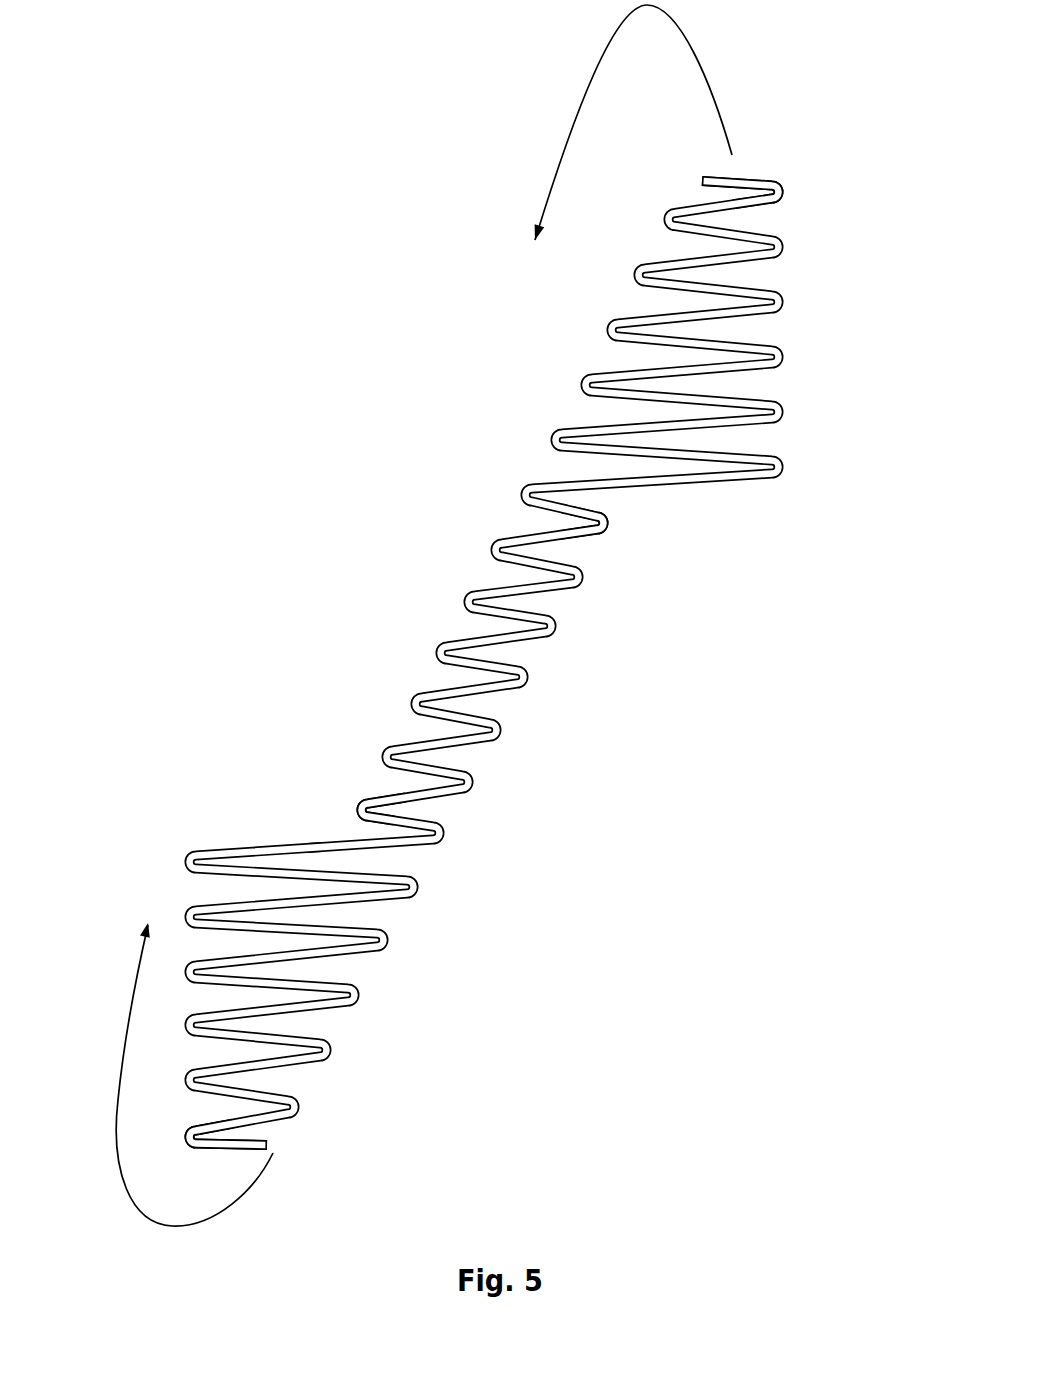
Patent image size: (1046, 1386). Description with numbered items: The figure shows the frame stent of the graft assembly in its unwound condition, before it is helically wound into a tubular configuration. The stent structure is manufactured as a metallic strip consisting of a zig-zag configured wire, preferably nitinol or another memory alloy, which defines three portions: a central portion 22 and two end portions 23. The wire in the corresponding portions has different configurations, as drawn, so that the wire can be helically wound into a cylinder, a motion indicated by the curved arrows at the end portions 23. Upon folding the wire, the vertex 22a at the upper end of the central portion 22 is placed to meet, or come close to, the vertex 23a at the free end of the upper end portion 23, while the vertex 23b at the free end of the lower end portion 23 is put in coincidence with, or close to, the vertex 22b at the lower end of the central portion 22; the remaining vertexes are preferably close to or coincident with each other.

The wire central portion 22 is at (463, 665).
The vertex 22a is at (608, 525).
The vertex 22b is at (357, 810).
The end portions 23 is at (487, 641).
The vertex 23a is at (700, 181).
The vertex 23b is at (268, 1146).